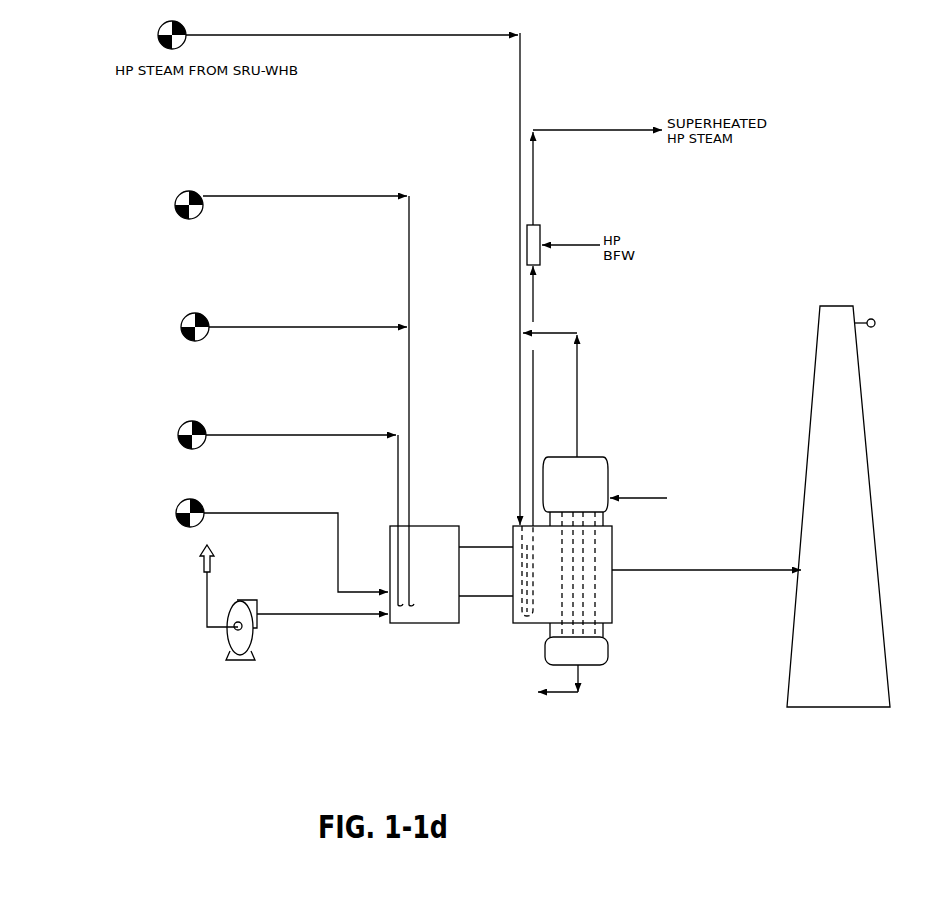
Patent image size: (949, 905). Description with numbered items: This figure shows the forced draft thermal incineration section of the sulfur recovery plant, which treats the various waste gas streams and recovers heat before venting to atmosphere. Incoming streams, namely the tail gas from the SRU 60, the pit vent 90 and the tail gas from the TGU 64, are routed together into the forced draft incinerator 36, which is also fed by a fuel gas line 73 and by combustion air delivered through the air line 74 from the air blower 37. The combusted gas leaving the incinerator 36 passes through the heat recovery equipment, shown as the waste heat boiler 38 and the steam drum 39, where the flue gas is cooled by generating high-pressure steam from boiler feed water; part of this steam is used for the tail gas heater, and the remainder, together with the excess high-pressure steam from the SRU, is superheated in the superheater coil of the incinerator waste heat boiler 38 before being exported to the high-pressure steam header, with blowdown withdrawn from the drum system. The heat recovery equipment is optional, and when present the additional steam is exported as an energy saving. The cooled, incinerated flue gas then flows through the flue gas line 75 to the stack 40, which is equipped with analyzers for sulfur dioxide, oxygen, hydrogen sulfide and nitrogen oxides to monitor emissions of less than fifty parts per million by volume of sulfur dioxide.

The tail gas line from SRU 60 is at (270, 196).
The pit vent line 90 is at (318, 327).
The tail gas line from TGU 64 is at (315, 435).
The fuel gas line 73 is at (251, 513).
The combustion air line 74 is at (293, 608).
The air blower 37 is at (241, 591).
The forced draft incinerator 36 is at (446, 521).
The heat recovery 38 is at (631, 527).
The heat recovery 39 is at (601, 445).
The flue gas line to stack 75 is at (687, 568).
The stack 40 is at (883, 413).